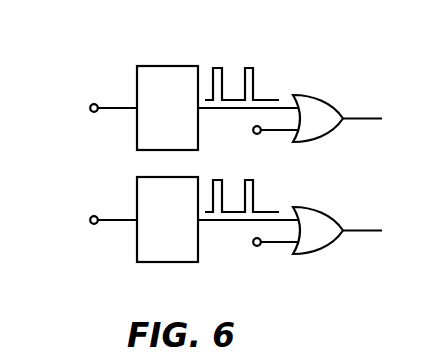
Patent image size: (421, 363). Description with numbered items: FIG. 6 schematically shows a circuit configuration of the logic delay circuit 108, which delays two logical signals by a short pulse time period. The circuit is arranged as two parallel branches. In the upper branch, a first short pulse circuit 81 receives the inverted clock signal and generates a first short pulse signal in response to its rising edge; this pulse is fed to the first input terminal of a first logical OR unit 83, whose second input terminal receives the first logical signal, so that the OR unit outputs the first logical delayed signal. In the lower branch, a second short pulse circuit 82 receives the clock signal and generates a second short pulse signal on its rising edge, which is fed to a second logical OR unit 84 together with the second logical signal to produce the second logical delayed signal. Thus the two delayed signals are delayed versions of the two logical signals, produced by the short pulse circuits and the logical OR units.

The logic delay circuit 108 is at (117, 55).
The first short pulse circuit 81 is at (167, 108).
The second short pulse circuit 82 is at (167, 219).
The first logical OR unit 83 is at (318, 118).
The second logical OR unit 84 is at (318, 230).